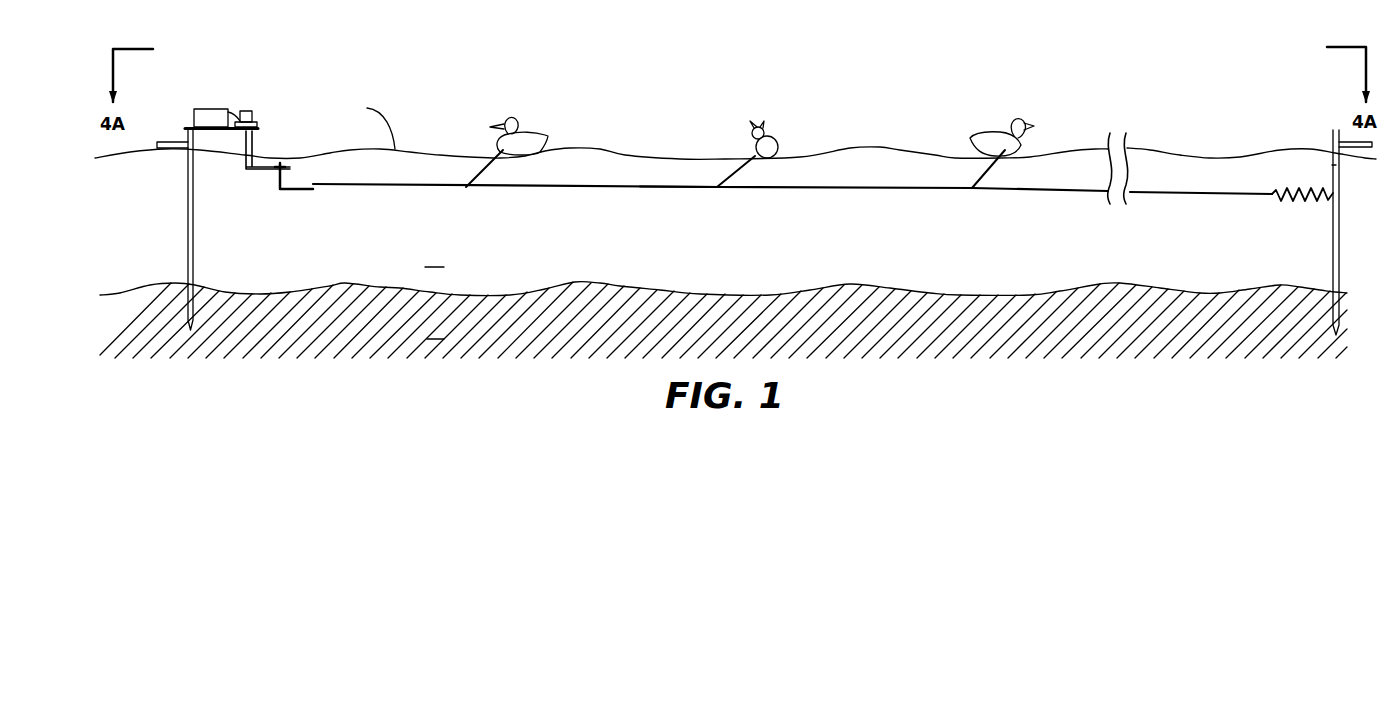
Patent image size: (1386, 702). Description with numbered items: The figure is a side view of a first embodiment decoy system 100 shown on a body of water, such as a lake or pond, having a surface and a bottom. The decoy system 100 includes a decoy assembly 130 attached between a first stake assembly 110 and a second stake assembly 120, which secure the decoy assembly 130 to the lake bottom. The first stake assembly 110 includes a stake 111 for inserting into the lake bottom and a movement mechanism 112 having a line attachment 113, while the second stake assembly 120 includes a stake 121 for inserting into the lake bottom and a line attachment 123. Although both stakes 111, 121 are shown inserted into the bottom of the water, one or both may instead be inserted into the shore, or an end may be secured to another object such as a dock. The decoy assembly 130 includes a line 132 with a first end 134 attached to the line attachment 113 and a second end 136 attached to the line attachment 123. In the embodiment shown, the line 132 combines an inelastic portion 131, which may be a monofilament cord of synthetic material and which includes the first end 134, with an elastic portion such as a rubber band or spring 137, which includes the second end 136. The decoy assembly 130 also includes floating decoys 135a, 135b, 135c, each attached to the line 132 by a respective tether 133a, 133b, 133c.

The decoy system 100 is at (236, 36).
The first stake assembly 110 is at (170, 198).
The stake 111 is at (194, 228).
The movement mechanism 112 is at (250, 97).
The line attachment 113 is at (312, 176).
The second stake assembly 120 is at (1349, 244).
The stake 121 is at (1334, 283).
The line attachment 123 is at (1341, 193).
The decoy assembly 130 is at (742, 103).
The inelastic portion 131 is at (555, 190).
The line 132 is at (680, 235).
The tether 133a is at (473, 165).
The tether 133b is at (745, 162).
The tether 133c is at (982, 165).
The first end 134 is at (312, 194).
The decoy 135a is at (530, 128).
The decoy 135b is at (780, 128).
The decoy 135c is at (993, 128).
The second end 136 is at (1328, 167).
The spring 137 is at (1288, 190).